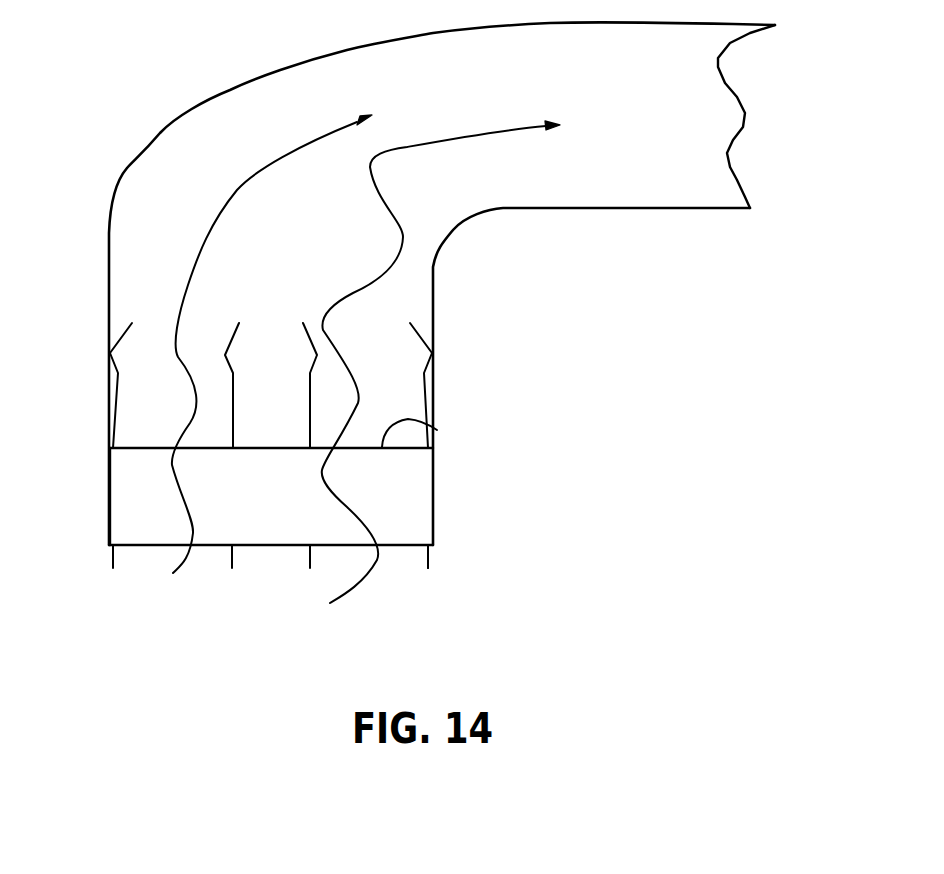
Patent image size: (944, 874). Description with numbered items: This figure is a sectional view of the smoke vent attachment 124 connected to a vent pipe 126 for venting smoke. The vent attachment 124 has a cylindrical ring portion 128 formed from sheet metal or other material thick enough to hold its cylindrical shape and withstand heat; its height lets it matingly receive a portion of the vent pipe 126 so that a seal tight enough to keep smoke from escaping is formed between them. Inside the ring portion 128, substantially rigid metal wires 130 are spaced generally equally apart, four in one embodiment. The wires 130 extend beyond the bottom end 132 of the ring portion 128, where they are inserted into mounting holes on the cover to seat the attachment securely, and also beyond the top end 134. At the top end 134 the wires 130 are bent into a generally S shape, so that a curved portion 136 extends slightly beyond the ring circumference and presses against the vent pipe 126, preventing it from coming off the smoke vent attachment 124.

The smoke vent attachment 124 is at (160, 503).
The vent pipe 126 is at (140, 160).
The cylindrical ring portion 128 is at (380, 488).
The metal wires 130 is at (117, 378).
The bottom end 132 is at (397, 548).
The top end 134 is at (437, 430).
The curved portion 136 is at (124, 340).
The S shape S is at (237, 190).